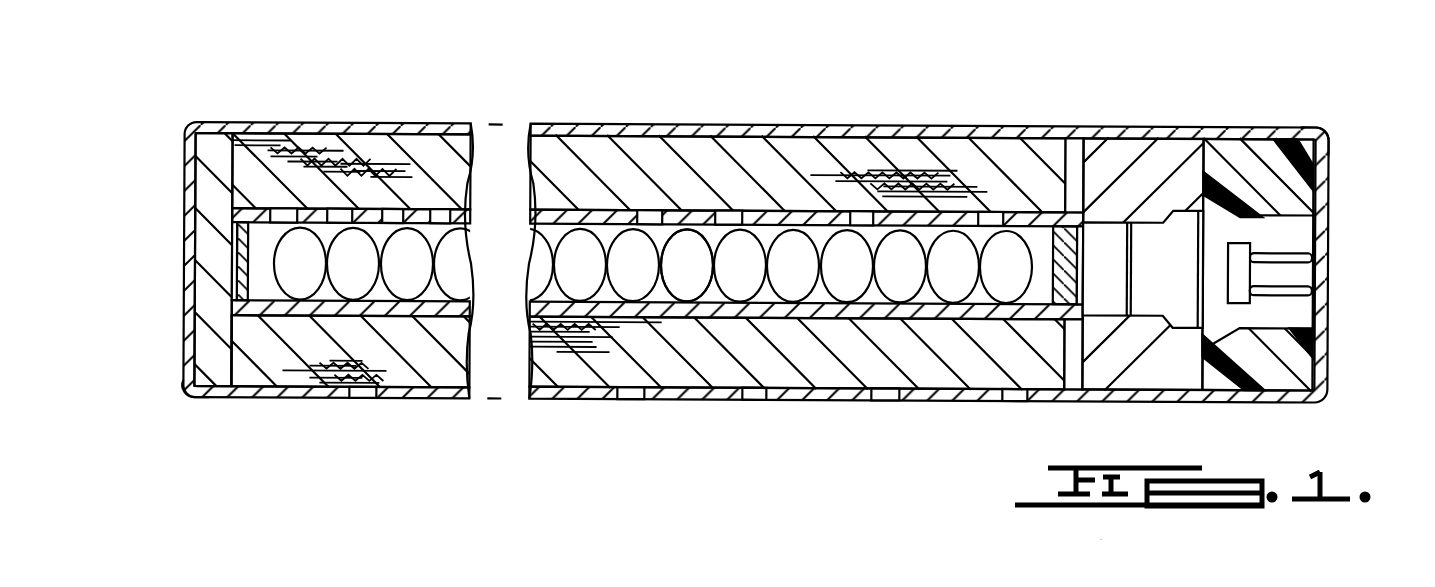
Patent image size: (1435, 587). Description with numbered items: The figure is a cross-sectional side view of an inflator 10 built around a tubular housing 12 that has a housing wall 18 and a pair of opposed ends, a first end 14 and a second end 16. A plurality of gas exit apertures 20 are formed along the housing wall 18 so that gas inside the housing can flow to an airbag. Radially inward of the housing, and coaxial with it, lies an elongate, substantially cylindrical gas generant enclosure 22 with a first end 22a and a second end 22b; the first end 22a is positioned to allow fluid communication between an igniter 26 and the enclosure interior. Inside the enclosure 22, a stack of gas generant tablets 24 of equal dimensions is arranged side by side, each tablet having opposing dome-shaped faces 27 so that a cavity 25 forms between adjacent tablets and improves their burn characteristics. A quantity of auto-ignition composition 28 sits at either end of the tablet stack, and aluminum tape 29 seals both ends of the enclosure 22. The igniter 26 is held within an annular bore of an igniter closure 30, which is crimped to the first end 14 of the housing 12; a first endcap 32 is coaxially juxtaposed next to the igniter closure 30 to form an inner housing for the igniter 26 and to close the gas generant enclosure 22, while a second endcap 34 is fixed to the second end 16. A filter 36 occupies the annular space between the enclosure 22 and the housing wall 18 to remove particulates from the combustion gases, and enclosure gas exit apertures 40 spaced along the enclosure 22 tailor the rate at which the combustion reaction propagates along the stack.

The inflator 10 is at (964, 85).
The tubular housing 12 is at (296, 402).
The first end 14 is at (1305, 118).
The second end 16 is at (211, 118).
The housing wall 18 is at (573, 399).
The gas exit apertures 20 is at (633, 398).
The gas generant enclosure 22 is at (851, 316).
The first end 22a is at (1043, 318).
The second end 22b is at (250, 314).
The gas generant tablets 24 is at (796, 242).
The cavity 25 is at (658, 228).
The igniter 26 is at (1193, 232).
The dome-shaped faces 27 is at (809, 304).
The auto-ignition composition 28 is at (233, 281).
The aluminum tape 29 is at (232, 243).
The igniter closure 30 is at (1298, 356).
The first endcap 32 is at (1158, 370).
The second endcap 34 is at (186, 388).
The filter 36 is at (960, 363).
The enclosure gas exit apertures 40 is at (340, 212).